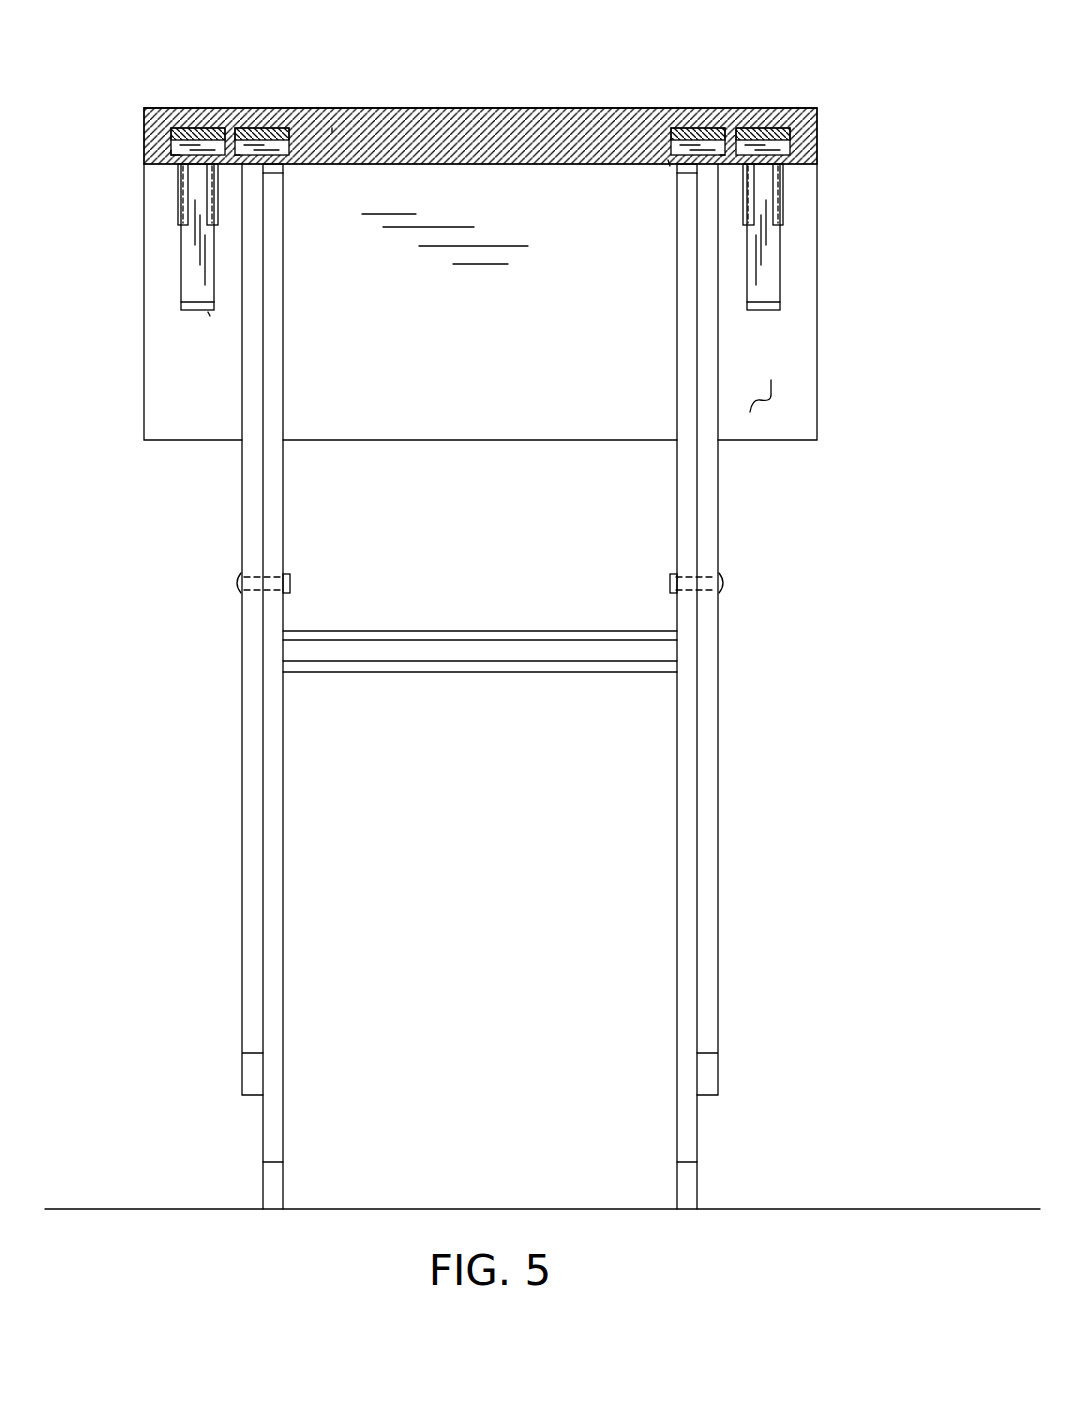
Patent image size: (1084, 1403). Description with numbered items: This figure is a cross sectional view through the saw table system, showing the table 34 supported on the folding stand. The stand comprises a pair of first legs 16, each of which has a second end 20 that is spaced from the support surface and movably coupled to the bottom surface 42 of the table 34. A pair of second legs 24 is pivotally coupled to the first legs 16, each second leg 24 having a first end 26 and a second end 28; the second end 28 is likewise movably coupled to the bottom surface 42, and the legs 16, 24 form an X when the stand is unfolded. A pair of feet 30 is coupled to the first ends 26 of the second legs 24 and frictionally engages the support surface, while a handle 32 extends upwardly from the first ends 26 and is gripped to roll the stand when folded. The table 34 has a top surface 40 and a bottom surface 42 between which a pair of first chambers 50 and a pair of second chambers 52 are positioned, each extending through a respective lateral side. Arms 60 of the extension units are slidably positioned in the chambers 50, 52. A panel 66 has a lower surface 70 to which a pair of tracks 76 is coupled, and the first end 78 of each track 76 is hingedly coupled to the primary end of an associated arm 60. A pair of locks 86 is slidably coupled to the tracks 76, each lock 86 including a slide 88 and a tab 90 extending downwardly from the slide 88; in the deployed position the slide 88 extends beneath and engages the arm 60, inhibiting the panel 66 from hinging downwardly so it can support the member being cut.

The first legs 16 is at (242, 1000).
The second end 20 is at (252, 167).
The second legs 24 is at (285, 860).
The first end 26 is at (273, 1163).
The second end 28 is at (332, 130).
The feet 30 is at (263, 1183).
The handle 32 is at (347, 630).
The table 34 is at (455, 108).
The top surface 40 is at (556, 108).
The bottom surface 42 is at (517, 165).
The first chambers 50 is at (184, 133).
The second chambers 52 is at (230, 168).
The arms 60 is at (208, 130).
The panel 66 is at (818, 400).
The lower surface 70 is at (772, 400).
The tracks 76 is at (178, 193).
The first end 78 is at (167, 153).
The locks 86 is at (178, 332).
The slide 88 is at (195, 265).
The tab 90 is at (208, 312).